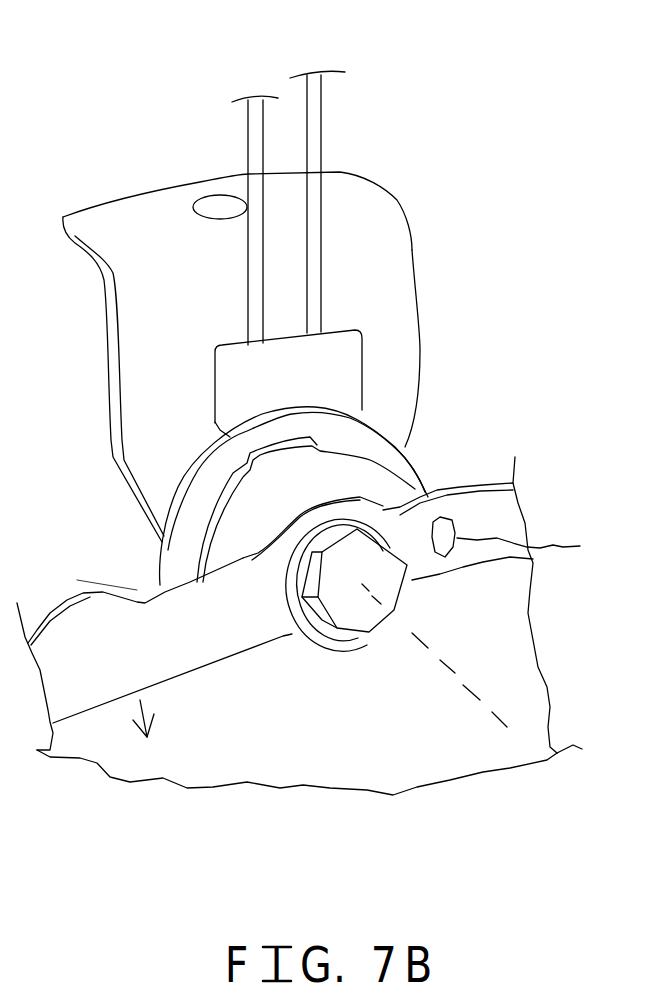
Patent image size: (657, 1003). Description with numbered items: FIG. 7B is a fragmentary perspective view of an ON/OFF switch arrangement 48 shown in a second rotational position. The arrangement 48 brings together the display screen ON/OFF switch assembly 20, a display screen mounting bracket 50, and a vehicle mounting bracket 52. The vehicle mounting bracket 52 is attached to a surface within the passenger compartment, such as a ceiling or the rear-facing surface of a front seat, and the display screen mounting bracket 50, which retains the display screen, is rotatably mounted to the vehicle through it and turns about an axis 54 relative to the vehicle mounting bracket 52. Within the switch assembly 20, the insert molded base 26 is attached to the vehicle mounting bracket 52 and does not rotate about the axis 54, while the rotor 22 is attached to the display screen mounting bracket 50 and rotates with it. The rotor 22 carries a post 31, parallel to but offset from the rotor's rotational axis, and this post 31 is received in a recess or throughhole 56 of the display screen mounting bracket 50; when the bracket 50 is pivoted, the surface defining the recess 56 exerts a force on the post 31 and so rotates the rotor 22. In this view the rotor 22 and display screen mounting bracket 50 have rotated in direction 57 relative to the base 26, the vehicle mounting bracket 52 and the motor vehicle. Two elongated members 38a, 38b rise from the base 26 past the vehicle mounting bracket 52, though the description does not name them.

The ON/OFF switch assembly 20 is at (482, 400).
The rotor 22 is at (322, 501).
The insert molded base 26 is at (318, 397).
The post 31 is at (453, 517).
The rod 38a is at (322, 133).
The rod 38b is at (248, 135).
The ON/OFF switch arrangement 48 is at (547, 108).
The display screen mounting bracket 50 is at (150, 669).
The vehicle mounting bracket 52 is at (200, 291).
The axis 54 is at (441, 665).
The recess or throughhole 56 is at (541, 534).
The direction 57 is at (150, 705).